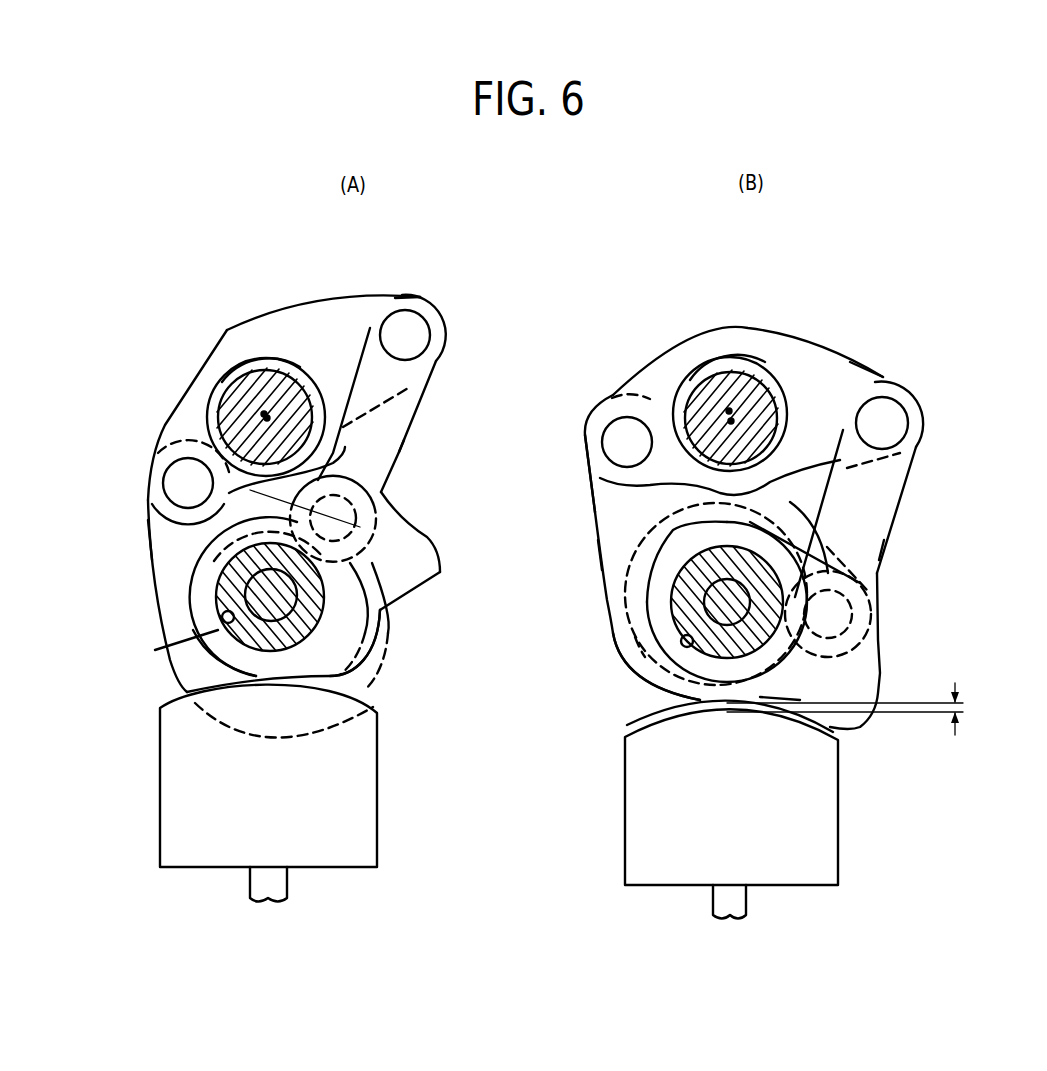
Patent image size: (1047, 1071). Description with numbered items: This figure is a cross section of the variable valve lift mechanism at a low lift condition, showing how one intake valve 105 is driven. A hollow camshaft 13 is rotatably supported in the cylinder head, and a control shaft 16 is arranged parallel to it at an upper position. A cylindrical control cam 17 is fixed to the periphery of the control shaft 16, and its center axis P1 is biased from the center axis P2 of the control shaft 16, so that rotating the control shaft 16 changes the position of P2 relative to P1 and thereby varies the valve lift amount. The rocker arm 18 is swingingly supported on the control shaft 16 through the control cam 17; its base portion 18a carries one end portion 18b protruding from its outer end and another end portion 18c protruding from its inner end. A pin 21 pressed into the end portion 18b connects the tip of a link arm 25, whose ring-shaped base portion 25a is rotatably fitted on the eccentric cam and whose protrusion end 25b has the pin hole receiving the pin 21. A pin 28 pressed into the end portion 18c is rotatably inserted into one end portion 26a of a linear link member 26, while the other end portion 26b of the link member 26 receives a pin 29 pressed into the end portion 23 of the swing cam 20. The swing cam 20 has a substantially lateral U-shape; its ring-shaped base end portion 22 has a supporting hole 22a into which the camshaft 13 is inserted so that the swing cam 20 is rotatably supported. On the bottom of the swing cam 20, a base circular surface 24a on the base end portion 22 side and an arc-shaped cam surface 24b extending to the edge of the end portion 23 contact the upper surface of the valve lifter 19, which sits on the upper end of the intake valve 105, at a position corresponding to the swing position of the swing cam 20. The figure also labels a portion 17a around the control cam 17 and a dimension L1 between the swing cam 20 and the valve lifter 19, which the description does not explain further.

The camshaft 13 is at (350, 670).
The control shaft 16 is at (262, 360).
The control cam 17 is at (232, 392).
The rocker shaft bearing portion 17a is at (260, 358).
The rocker arm 18 is at (338, 300).
The base portion 18a is at (267, 320).
The one end portion 18b is at (158, 440).
The other end portion 18c is at (375, 298).
The valve lifter 19 is at (160, 787).
The swing cam 20 is at (430, 534).
The pin 21 is at (188, 483).
The base end portion 22 is at (168, 588).
The supporting hole 22a is at (168, 650).
The end portion 23 is at (343, 512).
The base circular surface 24a is at (323, 728).
The cam surface 24b is at (397, 600).
The link arm 25 is at (153, 558).
The base portion 25a is at (387, 654).
The protrusion end 25b is at (152, 543).
The link member 26 is at (414, 409).
The one end portion 26a is at (412, 298).
The other end portion 26b is at (365, 552).
The pin 28 is at (414, 336).
The pin 29 is at (399, 453).
The intake valve 105 is at (288, 884).
The center axis of control cam P1 is at (262, 415).
The center axis of control shaft P2 is at (268, 418).
The valve lift gap L1 is at (860, 718).